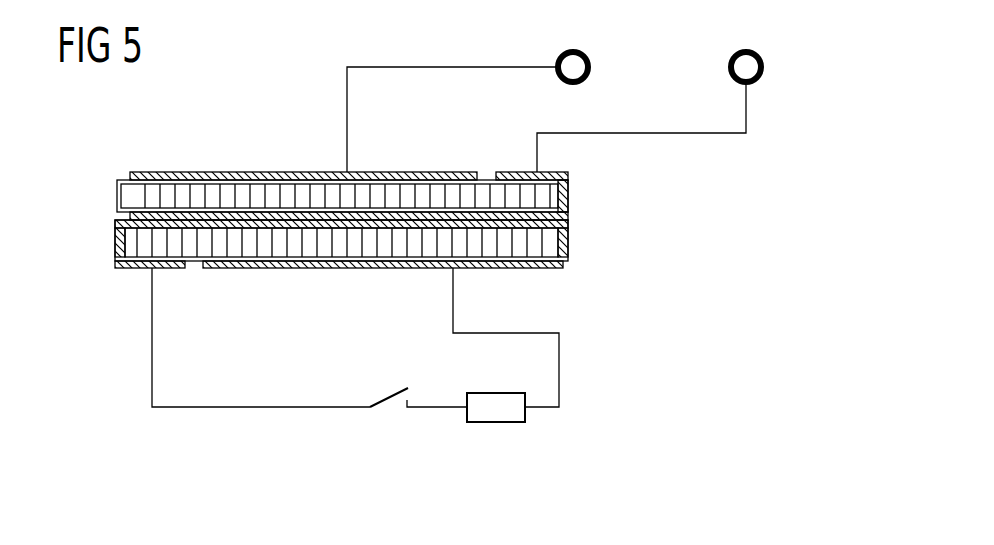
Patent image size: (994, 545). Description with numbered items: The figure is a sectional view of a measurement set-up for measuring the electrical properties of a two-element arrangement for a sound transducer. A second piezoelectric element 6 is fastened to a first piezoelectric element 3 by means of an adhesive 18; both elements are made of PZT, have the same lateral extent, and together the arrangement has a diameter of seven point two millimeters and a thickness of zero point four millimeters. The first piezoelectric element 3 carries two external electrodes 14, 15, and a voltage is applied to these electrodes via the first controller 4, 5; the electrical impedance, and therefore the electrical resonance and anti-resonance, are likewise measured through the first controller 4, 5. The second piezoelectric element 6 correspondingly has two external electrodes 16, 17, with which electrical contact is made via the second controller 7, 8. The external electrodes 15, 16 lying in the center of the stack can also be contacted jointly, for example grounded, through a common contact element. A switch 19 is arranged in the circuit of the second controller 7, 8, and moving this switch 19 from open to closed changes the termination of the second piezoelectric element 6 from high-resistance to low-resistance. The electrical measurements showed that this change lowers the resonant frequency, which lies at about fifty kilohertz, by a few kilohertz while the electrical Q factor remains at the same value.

The first piezoelectric element 3 is at (122, 193).
The first controller 4 is at (591, 67).
The first controller 5 is at (764, 67).
The second piezoelectric element 6 is at (127, 244).
The second controller 7 is at (152, 330).
The second controller 8 is at (559, 370).
The external electrode 14 is at (290, 172).
The external electrode 15 is at (566, 190).
The external electrode 16 is at (118, 230).
The external electrode 17 is at (347, 268).
The adhesive 18 is at (566, 224).
The switch 19 is at (398, 429).